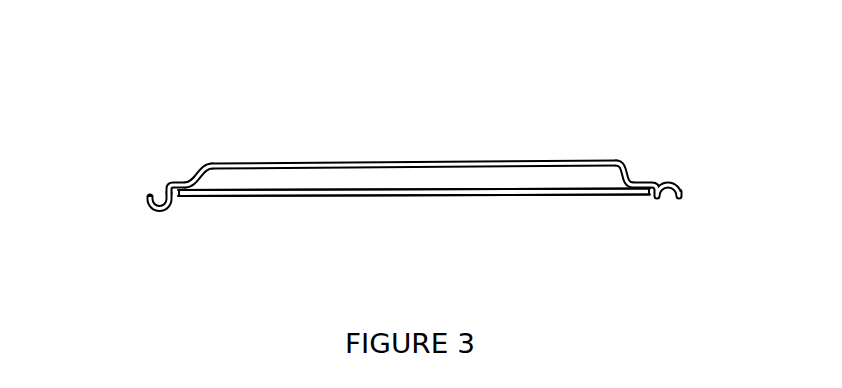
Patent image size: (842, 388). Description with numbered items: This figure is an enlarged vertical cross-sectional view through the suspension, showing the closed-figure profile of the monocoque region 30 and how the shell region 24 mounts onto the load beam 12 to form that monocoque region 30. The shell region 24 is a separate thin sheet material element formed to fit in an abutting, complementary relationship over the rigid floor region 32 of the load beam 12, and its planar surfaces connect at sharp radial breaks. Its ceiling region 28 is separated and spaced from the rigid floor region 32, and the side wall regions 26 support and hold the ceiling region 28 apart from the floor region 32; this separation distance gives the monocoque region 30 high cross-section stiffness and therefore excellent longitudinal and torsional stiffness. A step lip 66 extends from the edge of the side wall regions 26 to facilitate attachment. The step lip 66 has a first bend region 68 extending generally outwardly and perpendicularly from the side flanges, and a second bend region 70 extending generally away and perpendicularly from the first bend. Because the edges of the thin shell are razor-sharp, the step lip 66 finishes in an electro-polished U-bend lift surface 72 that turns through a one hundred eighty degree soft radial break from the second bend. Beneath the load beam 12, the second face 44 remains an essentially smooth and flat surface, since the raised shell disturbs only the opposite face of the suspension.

The monocoque region 30 is at (379, 88).
The shell region 24 is at (427, 152).
The ceiling region 28 is at (300, 161).
The side wall regions 26 is at (632, 172).
The step lip 66 is at (668, 177).
The first bend region 68 is at (184, 187).
The second bend region 70 is at (165, 191).
The U-bend lift surface 72 is at (158, 212).
The load beam 12 is at (428, 216).
The rigid floor region 32 is at (316, 193).
The second face 44 is at (555, 196).